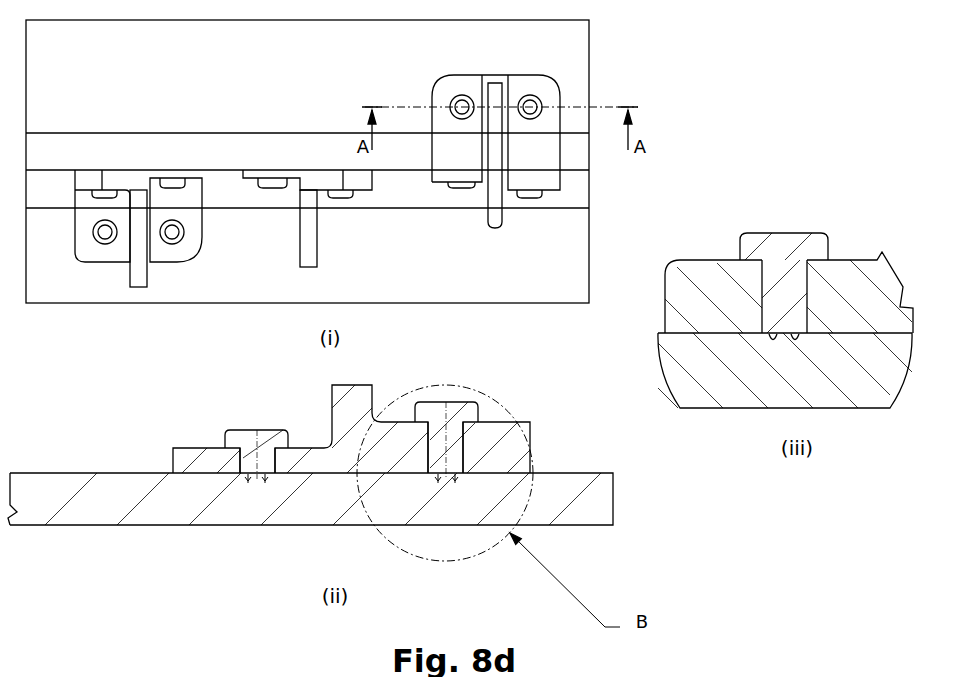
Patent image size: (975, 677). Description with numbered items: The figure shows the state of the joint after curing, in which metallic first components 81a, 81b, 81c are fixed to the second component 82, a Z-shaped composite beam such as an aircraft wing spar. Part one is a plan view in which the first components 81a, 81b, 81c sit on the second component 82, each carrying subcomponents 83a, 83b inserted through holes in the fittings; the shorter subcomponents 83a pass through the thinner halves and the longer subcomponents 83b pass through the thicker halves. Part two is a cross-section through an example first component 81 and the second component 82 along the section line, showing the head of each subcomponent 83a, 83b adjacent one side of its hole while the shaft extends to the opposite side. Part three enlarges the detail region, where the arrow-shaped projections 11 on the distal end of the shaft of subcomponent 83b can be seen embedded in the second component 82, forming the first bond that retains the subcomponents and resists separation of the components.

The second component 82 is at (205, 88).
The first component 81 is at (340, 430).
The first component 81a is at (492, 217).
The first component 81b is at (307, 210).
The first component 81c is at (183, 250).
The subcomponent 83a is at (103, 235).
The subcomponent 83b is at (340, 197).
The projections 11 is at (795, 341).